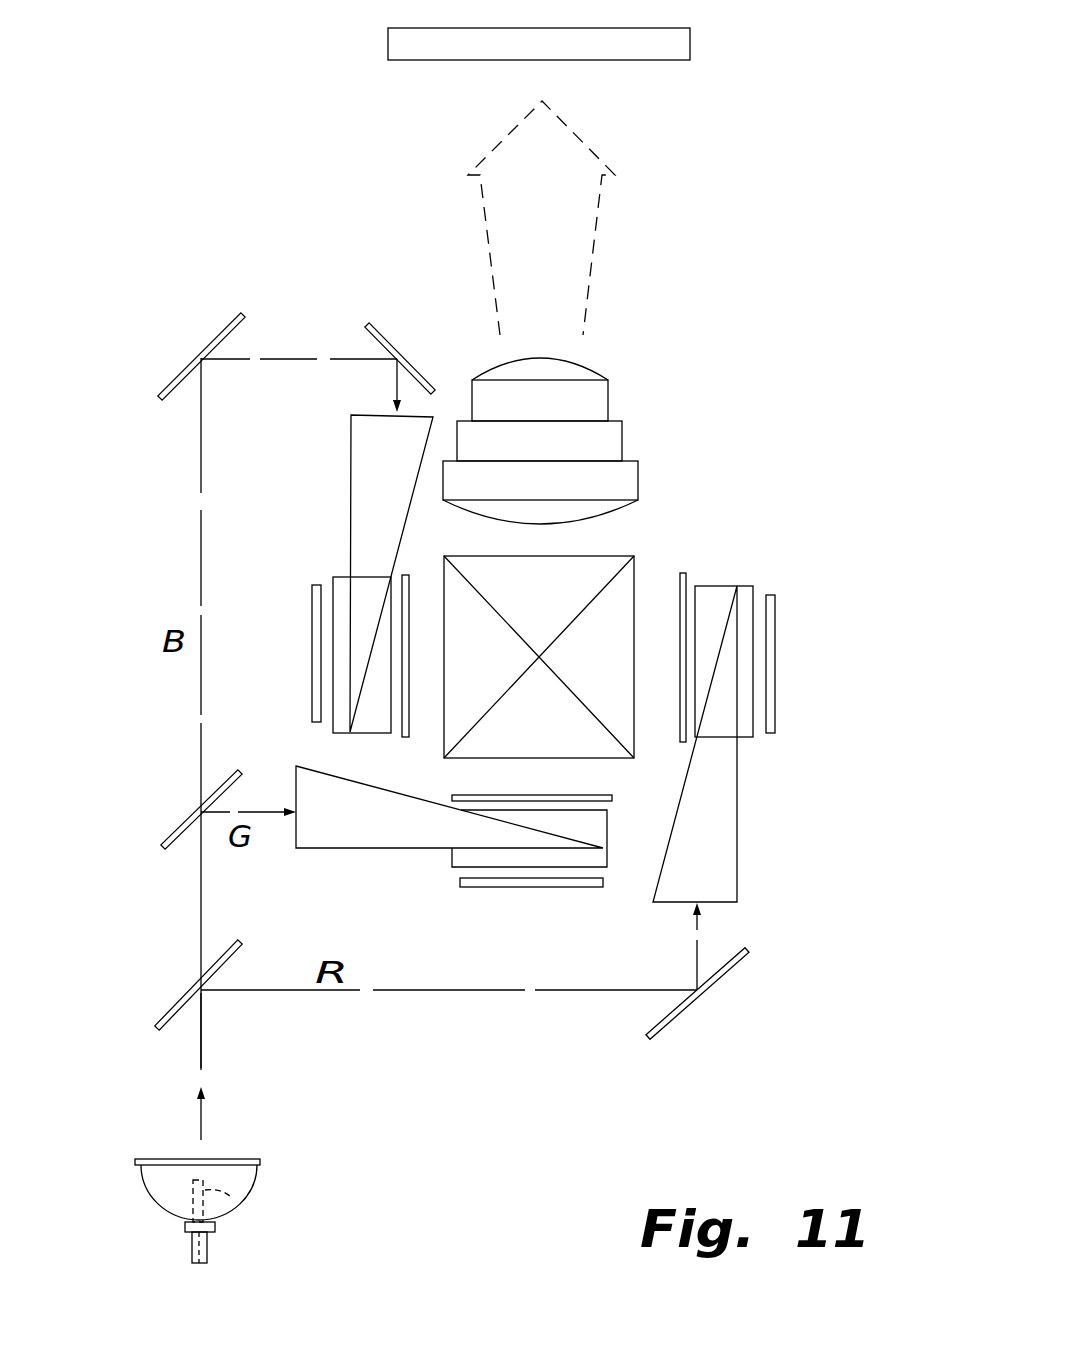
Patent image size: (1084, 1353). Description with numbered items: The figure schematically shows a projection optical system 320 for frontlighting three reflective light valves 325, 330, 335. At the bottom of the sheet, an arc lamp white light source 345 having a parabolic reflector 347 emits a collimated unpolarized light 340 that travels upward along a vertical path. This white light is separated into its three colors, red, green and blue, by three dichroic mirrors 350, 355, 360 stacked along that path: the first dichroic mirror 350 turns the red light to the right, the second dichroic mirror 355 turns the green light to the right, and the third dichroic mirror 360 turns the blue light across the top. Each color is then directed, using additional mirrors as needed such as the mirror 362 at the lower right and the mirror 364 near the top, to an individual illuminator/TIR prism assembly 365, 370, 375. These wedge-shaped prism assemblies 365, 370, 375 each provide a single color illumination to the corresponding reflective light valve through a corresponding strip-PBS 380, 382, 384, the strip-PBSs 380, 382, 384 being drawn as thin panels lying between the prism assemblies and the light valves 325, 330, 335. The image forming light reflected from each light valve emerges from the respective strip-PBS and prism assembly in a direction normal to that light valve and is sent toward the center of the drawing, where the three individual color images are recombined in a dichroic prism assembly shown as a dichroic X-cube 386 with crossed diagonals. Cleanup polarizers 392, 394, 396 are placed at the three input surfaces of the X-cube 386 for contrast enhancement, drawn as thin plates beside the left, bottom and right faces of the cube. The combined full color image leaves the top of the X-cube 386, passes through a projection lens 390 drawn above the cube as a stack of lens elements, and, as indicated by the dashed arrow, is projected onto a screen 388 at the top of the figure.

The projection optical system 320 is at (832, 370).
The reflective light valve 325 is at (773, 698).
The reflective light valve 330 is at (483, 885).
The reflective light valve 335 is at (312, 608).
The collimated unpolarized light 340 is at (202, 1027).
The arc lamp white light source 345 is at (237, 1200).
The parabolic reflector 347 is at (124, 1162).
The dichroic mirror 350 is at (158, 1023).
The dichroic mirror 355 is at (170, 832).
The dichroic mirror 360 is at (166, 392).
The mirror 362 is at (738, 965).
The mirror 364 is at (374, 328).
The illuminator/TIR prism assembly 365 is at (723, 845).
The illuminator/TIR prism assembly 370 is at (347, 827).
The illuminator/TIR prism assembly 375 is at (351, 456).
The strip-PBS 380 is at (745, 727).
The strip-PBS 382 is at (463, 857).
The strip-PBS 384 is at (333, 580).
The dichroic X-cube 386 is at (654, 540).
The screen 388 is at (650, 78).
The projection lens 390 is at (658, 390).
The cleanup polarizer 392 is at (683, 572).
The cleanup polarizer 394 is at (588, 795).
The cleanup polarizer 396 is at (409, 722).